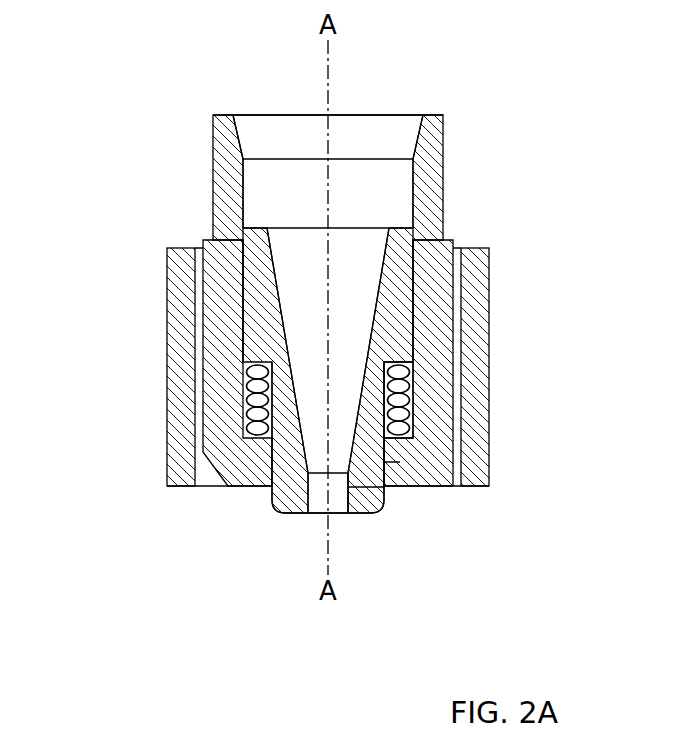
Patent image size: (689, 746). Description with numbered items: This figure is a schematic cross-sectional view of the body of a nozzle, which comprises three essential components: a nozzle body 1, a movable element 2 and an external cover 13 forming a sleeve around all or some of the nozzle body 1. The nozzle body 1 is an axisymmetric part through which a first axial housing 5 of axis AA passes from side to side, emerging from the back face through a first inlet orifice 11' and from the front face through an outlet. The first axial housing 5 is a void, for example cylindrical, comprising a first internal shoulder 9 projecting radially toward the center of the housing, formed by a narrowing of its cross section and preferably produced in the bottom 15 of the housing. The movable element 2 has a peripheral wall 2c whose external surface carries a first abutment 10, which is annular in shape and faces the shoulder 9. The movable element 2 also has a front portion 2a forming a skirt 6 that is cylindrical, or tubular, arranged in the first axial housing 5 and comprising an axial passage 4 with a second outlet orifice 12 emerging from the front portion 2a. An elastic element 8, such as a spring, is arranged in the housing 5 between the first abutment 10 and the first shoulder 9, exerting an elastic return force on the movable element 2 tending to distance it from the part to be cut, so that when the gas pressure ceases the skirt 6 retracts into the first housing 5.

The nozzle body 1 is at (225, 305).
The movable element 2 is at (261, 247).
The front portion 2a is at (360, 497).
The peripheral wall 2c is at (258, 320).
The axial passage 4 is at (350, 288).
The first axial housing 5 is at (350, 196).
The skirt 6 is at (290, 497).
The elastic element 8 is at (250, 398).
The first internal shoulder 9 is at (401, 416).
The first abutment 10 is at (403, 350).
The first inlet orifice 11' is at (338, 73).
The second outlet orifice 12 is at (343, 524).
The external cover 13 is at (480, 295).
The bottom 15 is at (390, 456).